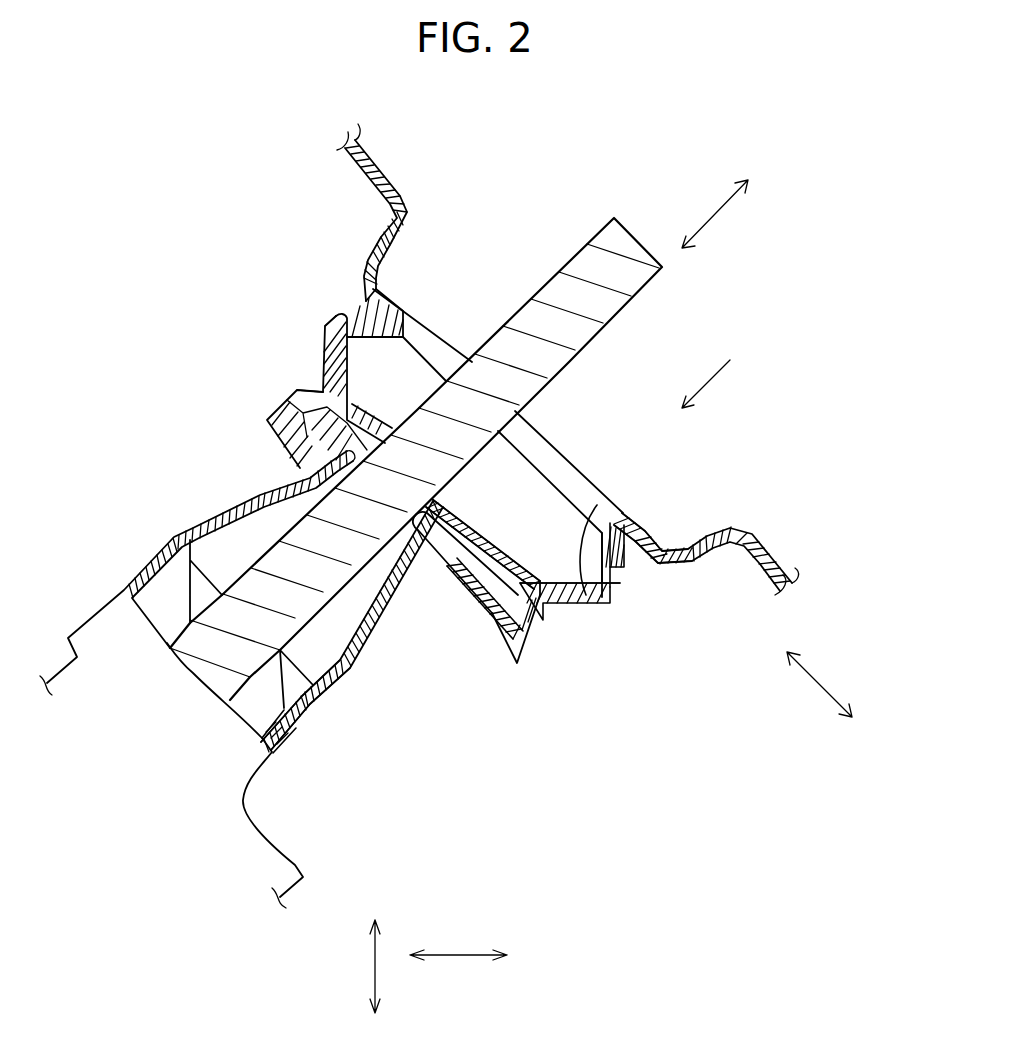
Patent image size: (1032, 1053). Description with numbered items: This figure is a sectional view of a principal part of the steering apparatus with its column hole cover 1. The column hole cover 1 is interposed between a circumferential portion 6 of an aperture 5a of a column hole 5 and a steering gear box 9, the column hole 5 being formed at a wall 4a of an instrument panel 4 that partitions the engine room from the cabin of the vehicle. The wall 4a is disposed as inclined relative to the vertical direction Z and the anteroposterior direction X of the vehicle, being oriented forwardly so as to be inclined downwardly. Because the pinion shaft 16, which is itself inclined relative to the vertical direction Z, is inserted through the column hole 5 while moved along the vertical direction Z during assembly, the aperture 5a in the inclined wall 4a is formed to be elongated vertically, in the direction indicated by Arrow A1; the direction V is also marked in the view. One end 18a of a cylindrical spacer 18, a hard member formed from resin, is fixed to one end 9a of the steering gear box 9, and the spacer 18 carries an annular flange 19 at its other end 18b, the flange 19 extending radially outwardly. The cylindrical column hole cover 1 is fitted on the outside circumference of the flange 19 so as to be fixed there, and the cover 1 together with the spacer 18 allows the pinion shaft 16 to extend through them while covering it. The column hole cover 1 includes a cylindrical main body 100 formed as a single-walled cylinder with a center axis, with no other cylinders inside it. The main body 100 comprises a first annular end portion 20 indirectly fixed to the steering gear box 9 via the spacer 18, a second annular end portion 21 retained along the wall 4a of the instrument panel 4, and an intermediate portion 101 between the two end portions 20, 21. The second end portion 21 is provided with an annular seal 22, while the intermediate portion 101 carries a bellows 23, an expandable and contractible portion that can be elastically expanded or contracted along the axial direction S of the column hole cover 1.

The column hole cover 1 is at (313, 310).
The intermediate portion 101 is at (326, 347).
The first annular end portion 20 is at (288, 404).
The second annular end portion 21 is at (362, 310).
The annular seal 22 is at (365, 310).
The bellows 23 is at (336, 372).
The pinion shaft 16 is at (290, 571).
The cylindrical spacer 18 is at (360, 684).
The one end of the spacer 18a is at (313, 717).
The other end of the spacer 18b is at (433, 557).
The annular flange 19 is at (490, 600).
The steering gear box 9 is at (311, 868).
The one end of the steering gear box 9a is at (293, 728).
The column hole 5 is at (590, 480).
The aperture 5a is at (587, 510).
The circumferential portion 6 is at (648, 567).
The instrument panel 4 is at (784, 560).
The wall 4a is at (643, 537).
The cylindrical main body 100 is at (568, 622).
The axial direction S is at (717, 215).
The direction V is at (719, 371).
The Arrow A1 is at (813, 680).
The anteroposterior direction X is at (467, 955).
The vertical direction Z is at (375, 968).